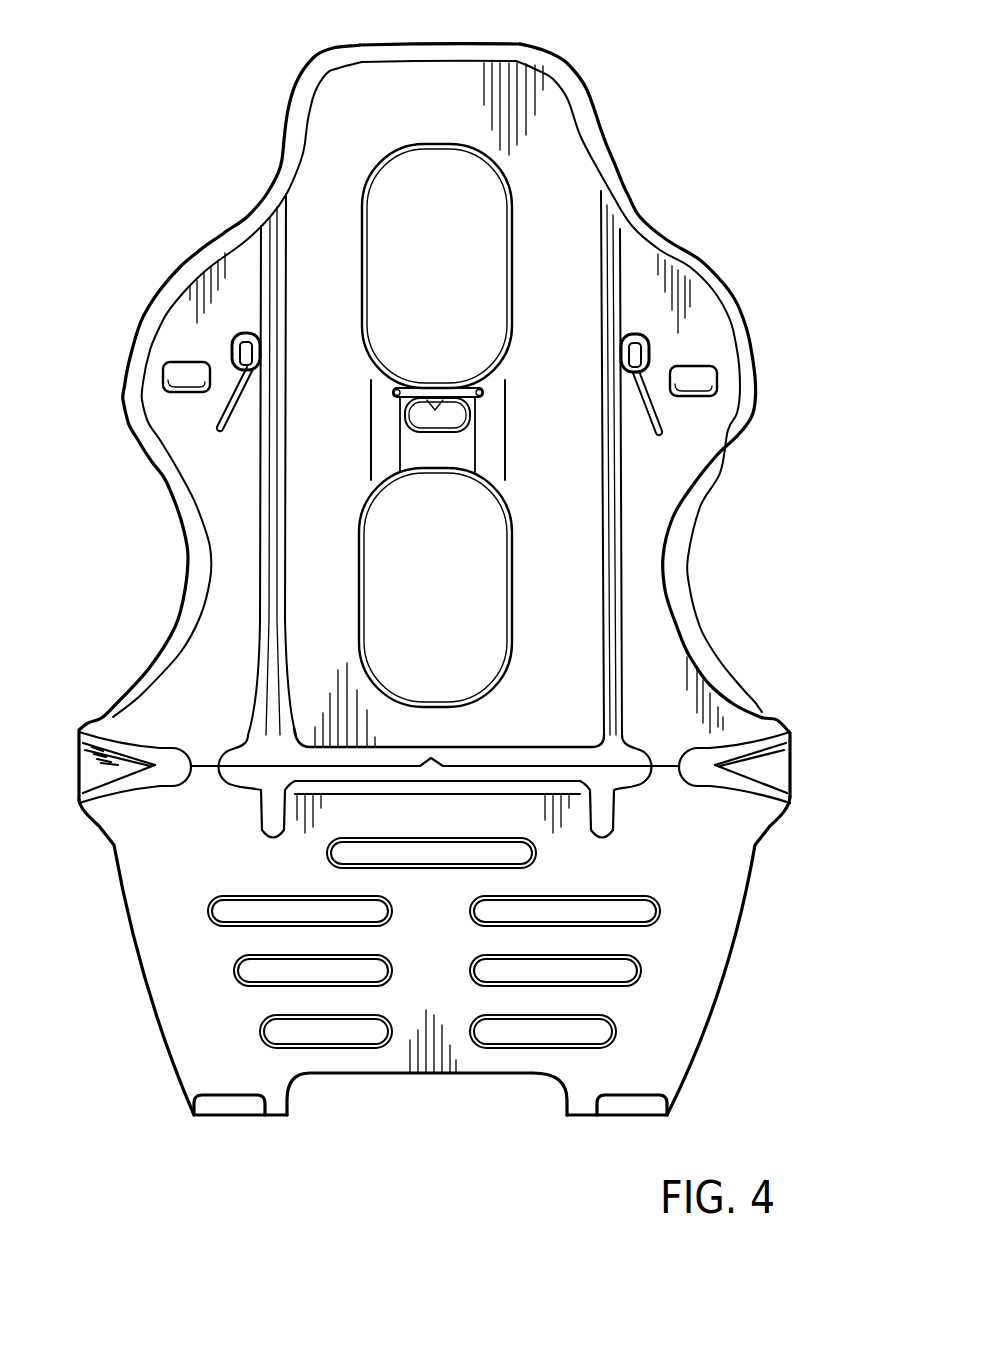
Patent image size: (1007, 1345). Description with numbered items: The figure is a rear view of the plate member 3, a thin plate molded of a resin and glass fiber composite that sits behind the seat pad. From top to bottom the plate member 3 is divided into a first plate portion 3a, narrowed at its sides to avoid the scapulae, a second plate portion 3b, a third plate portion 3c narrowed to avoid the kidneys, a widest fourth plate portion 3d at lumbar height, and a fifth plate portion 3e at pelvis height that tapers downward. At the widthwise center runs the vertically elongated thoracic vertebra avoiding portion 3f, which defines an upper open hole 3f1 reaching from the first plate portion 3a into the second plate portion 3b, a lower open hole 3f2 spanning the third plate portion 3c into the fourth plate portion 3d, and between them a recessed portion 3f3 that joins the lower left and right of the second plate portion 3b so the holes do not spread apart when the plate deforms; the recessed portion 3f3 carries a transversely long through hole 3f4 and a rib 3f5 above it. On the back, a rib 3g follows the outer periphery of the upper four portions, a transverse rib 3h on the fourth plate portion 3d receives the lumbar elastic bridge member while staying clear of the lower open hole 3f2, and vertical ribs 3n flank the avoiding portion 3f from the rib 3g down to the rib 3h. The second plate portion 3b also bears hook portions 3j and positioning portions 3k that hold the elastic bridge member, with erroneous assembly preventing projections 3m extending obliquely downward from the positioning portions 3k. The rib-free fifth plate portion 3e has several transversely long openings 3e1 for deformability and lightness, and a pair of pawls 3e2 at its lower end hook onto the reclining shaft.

The plate member 3 is at (268, 118).
The first plate portion 3a is at (553, 107).
The second plate portion 3b is at (697, 300).
The third plate portion 3c is at (647, 557).
The fourth plate portion 3d is at (723, 730).
The fifth plate portion 3e is at (713, 858).
The openings 3e1 is at (268, 1038).
The pawls 3e2 is at (283, 1100).
The thoracic vertebra avoiding portion 3f is at (384, 145).
The upper open hole 3f1 is at (373, 217).
The lower open hole 3f2 is at (370, 582).
The recessed portion 3f3 is at (420, 463).
The through hole 3f4 is at (416, 387).
The rib 3f5 is at (453, 382).
The rib 3g is at (195, 252).
The rib 3h is at (396, 750).
The hook portions 3j is at (170, 377).
The positioning portions 3k is at (232, 348).
The erroneous assembly preventing projections 3m is at (213, 423).
The ribs 3n is at (266, 232).